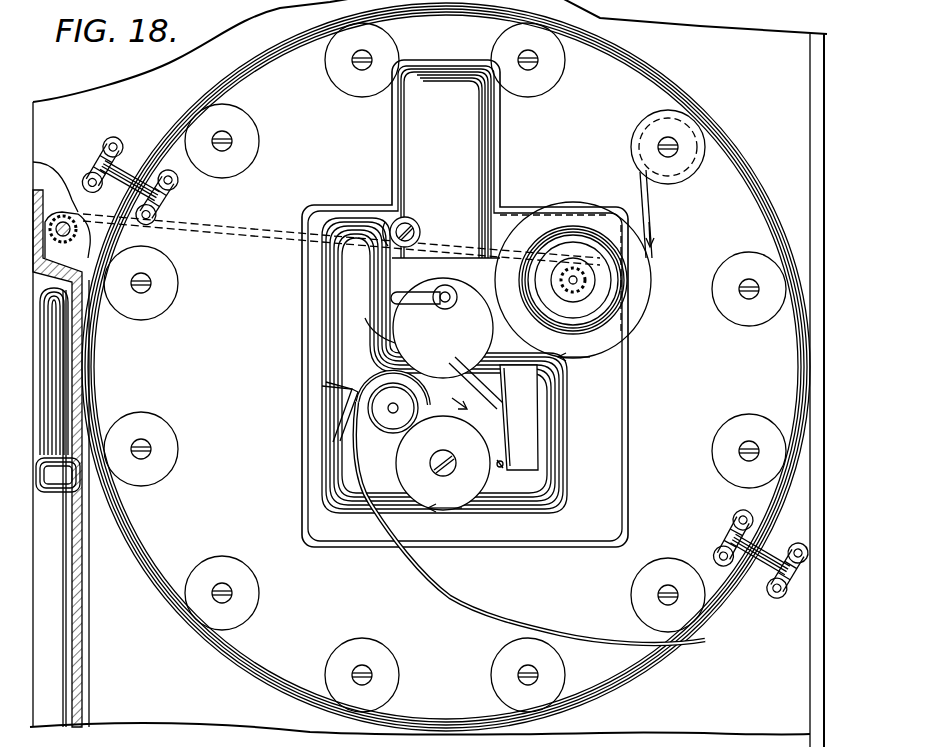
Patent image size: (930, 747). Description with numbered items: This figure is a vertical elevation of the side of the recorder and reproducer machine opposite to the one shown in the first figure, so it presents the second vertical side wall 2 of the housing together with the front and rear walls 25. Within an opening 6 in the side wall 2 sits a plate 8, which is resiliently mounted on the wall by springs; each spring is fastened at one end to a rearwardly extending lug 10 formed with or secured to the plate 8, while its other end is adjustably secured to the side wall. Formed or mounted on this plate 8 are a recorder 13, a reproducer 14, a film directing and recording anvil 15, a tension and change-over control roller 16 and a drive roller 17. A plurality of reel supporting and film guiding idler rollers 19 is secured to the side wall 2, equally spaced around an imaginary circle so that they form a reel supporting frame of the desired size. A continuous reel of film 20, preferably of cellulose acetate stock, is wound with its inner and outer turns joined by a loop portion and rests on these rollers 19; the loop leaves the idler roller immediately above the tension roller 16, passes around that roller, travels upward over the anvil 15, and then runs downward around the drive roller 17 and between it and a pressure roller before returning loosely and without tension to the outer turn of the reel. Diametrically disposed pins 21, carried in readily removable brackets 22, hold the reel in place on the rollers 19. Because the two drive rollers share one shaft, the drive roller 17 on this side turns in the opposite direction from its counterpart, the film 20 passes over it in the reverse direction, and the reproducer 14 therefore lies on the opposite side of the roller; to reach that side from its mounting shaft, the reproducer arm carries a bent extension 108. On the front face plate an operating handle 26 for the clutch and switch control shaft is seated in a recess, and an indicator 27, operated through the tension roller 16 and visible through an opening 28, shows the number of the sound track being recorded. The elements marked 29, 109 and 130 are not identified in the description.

The side wall 2 is at (781, 42).
The opening 6 is at (500, 165).
The plate 8 is at (465, 303).
The rearwardly extending lug 10 is at (382, 422).
The recorder 13 is at (422, 158).
The reproducer 14 is at (517, 417).
The film directing and recording anvil 15 is at (443, 328).
The tension and change-over control roller 16 is at (598, 333).
The drive roller 17 is at (443, 464).
The reel supporting and film guiding idler rollers 19 is at (173, 425).
The film 20 is at (633, 190).
The pins 21 is at (767, 560).
The brackets 22 is at (720, 550).
The front and rear walls 25 is at (75, 612).
The operating handle 26 is at (50, 338).
The indicator 27 is at (80, 220).
The opening 28 is at (60, 197).
The tape 29 is at (368, 490).
The bent extension 108 is at (378, 335).
The spring lever 109 is at (332, 435).
The wire 130 is at (240, 232).